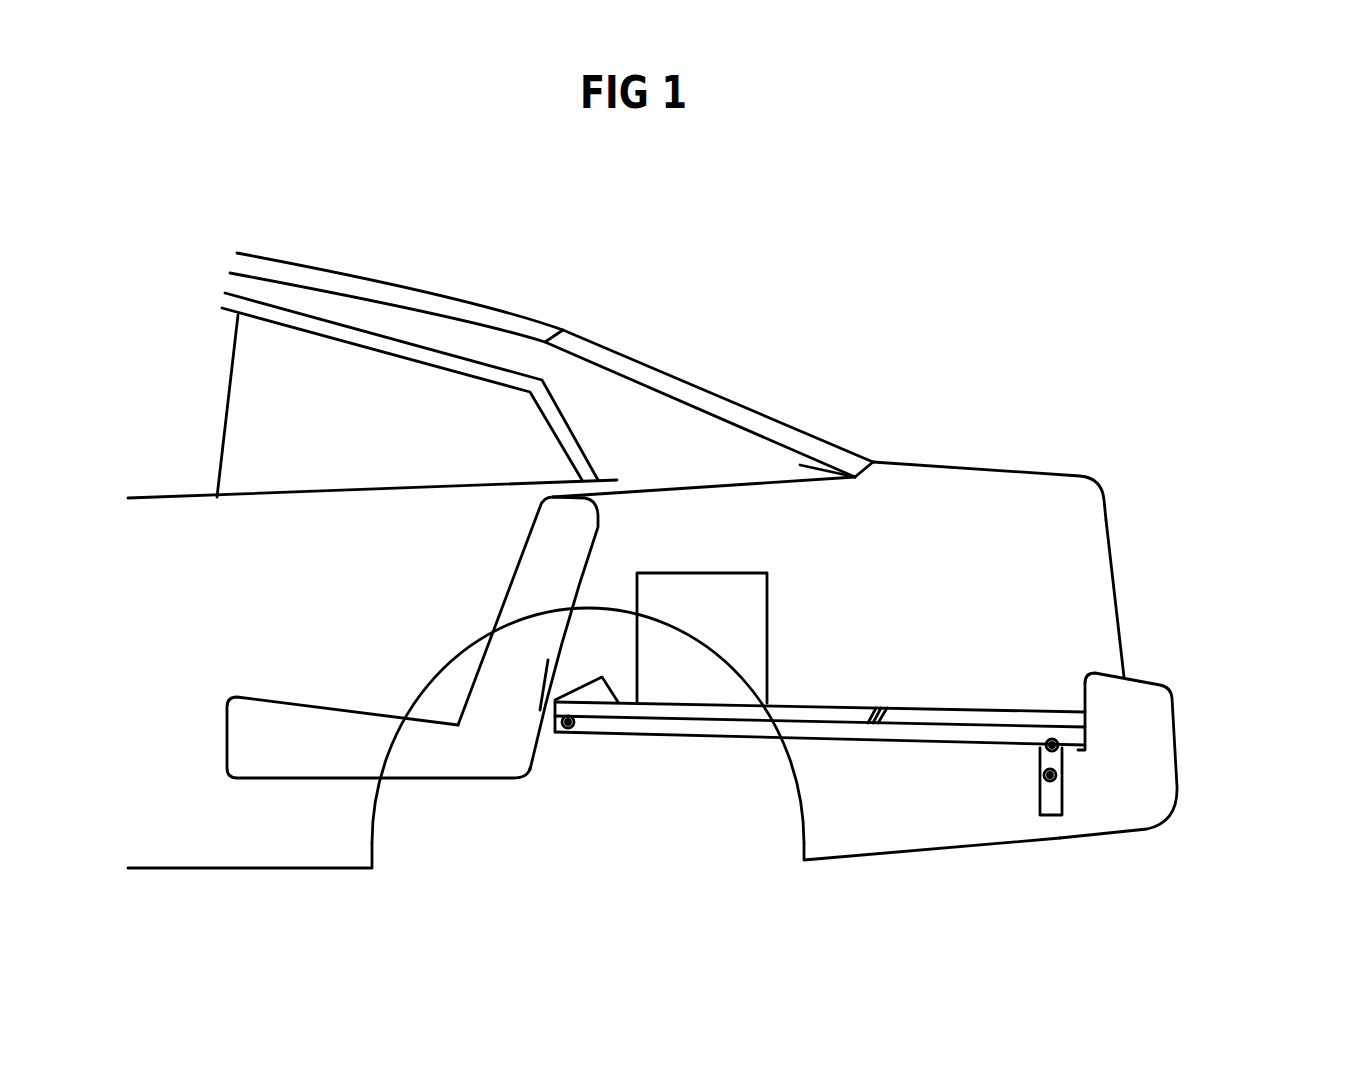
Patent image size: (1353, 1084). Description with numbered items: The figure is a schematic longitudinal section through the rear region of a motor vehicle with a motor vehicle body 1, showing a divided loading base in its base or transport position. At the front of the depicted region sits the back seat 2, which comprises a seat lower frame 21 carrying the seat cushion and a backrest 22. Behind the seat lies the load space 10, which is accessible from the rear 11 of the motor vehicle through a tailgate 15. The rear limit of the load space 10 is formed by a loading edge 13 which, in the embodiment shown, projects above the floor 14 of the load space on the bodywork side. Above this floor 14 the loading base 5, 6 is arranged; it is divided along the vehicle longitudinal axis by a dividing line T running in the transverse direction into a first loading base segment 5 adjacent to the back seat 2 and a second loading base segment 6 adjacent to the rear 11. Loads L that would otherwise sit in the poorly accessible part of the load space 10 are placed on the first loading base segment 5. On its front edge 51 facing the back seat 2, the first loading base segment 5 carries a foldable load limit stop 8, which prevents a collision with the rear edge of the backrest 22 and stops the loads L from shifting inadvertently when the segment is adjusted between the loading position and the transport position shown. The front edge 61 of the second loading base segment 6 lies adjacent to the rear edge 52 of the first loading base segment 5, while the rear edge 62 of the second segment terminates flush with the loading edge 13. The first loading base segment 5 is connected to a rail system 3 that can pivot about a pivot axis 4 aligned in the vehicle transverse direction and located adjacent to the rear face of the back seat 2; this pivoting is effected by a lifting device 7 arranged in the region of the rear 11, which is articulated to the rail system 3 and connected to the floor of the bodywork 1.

The motor vehicle body 1 is at (467, 337).
The load space 10 is at (848, 508).
The tailgate 15 is at (1088, 477).
The rear of the motor vehicle 11 is at (1123, 627).
The loading edge 13 is at (1170, 690).
The rear edge of the second loading base segment 62 is at (1073, 722).
The floor of the load space 14 is at (728, 753).
The back seat 2 is at (369, 674).
The backrest 22 is at (525, 573).
The seat lower frame 21 is at (278, 760).
The front edge of the first loading base segment 51 is at (542, 708).
The foldable load limit stop 8 is at (593, 688).
The loads L is at (755, 603).
The first loading base segment 5 is at (650, 710).
The second loading base segment 6 is at (985, 717).
The rail system 3 is at (845, 733).
The pivot axis 4 is at (568, 728).
The rear edge of the first loading base segment 52 is at (872, 708).
The front edge of the second loading base segment 61 is at (884, 712).
The dividing line T is at (880, 710).
The lifting device 7 is at (1053, 792).